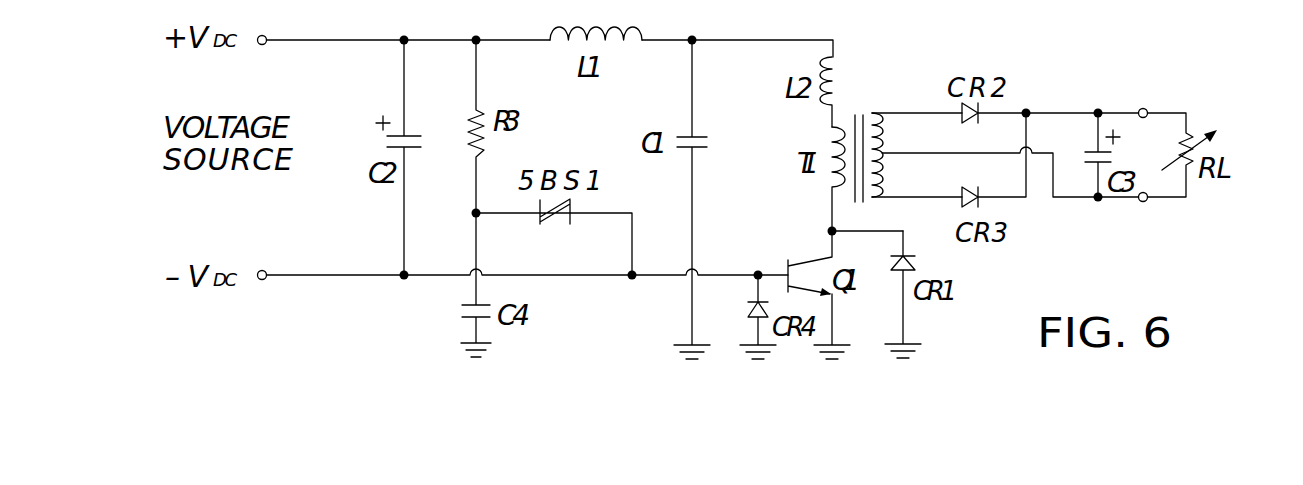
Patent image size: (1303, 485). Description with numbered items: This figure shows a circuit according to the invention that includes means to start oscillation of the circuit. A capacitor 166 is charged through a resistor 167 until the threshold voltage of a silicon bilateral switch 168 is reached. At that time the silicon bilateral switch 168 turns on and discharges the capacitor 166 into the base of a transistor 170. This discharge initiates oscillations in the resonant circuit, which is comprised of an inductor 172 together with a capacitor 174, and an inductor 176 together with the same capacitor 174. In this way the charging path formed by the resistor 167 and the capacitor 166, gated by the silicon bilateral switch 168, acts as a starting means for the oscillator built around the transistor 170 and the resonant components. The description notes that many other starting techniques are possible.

The capacitor 166 is at (463, 318).
The resistor 167 is at (476, 113).
The silicon bilateral switch 168 is at (540, 222).
The transistor 170 is at (786, 263).
The inductor 172 is at (640, 32).
The capacitor 174 is at (700, 134).
The inductor 176 is at (835, 64).